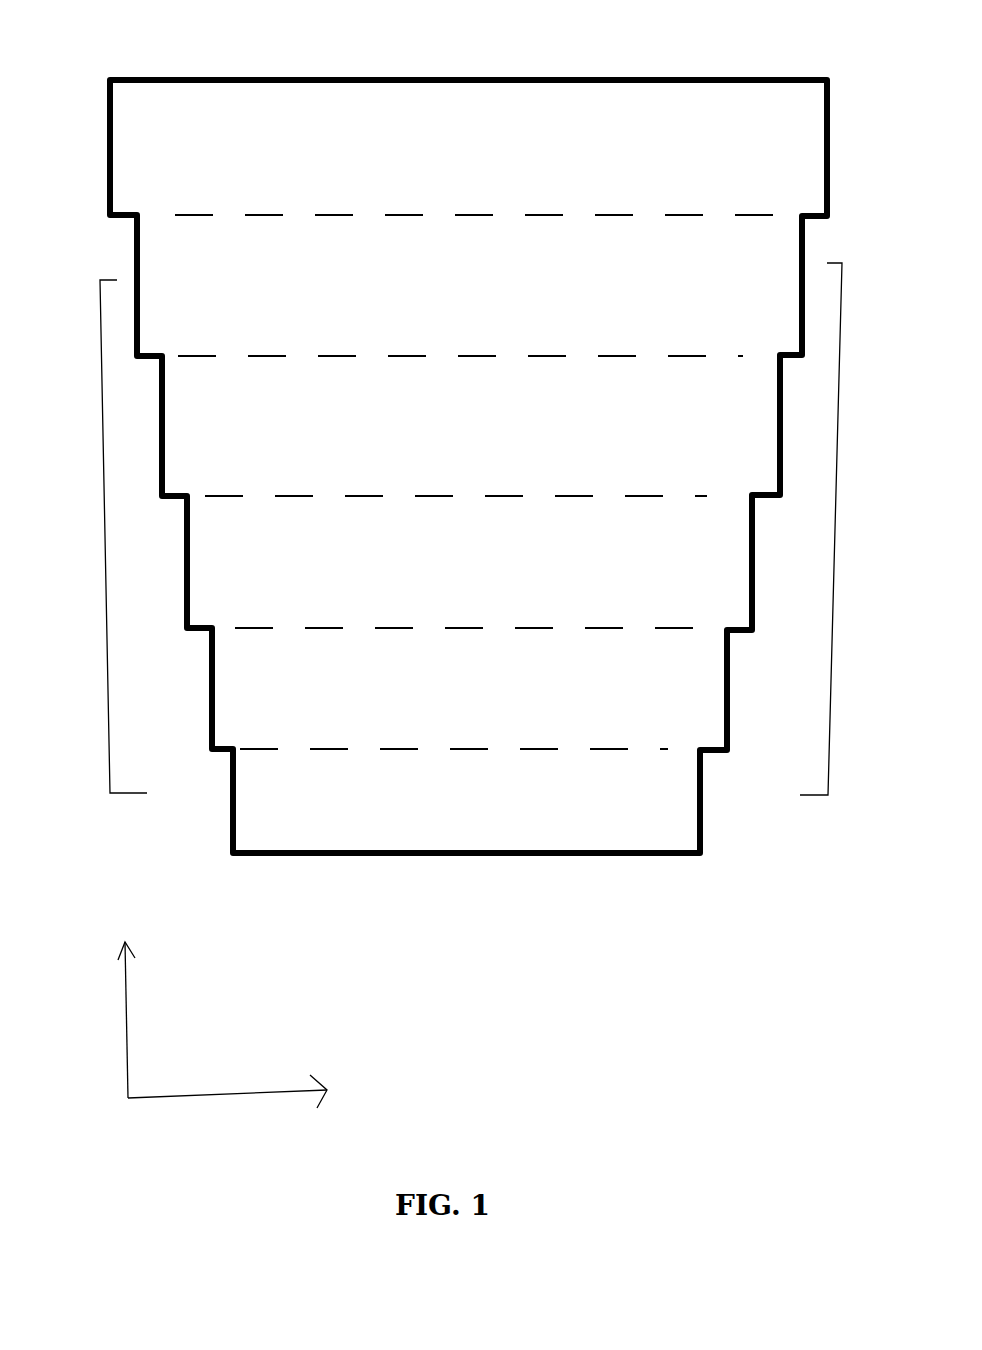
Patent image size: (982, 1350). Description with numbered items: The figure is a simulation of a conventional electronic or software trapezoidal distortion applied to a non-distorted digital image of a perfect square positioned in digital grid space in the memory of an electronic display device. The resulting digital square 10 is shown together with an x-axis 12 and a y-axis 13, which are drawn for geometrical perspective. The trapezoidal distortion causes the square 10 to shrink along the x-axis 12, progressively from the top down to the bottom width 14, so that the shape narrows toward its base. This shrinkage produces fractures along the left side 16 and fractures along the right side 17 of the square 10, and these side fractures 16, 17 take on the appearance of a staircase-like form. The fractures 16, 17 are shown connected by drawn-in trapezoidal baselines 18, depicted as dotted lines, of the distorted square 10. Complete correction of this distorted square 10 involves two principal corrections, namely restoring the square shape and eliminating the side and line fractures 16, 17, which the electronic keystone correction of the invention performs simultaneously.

The digital square 10 is at (468, 127).
The x-axis 12 is at (251, 1109).
The y-axis 13 is at (102, 1005).
The bottom width 14 is at (462, 857).
The left side fractures 16 is at (102, 546).
The right side fractures 17 is at (830, 560).
The trapezoidal baselines 18 is at (680, 358).